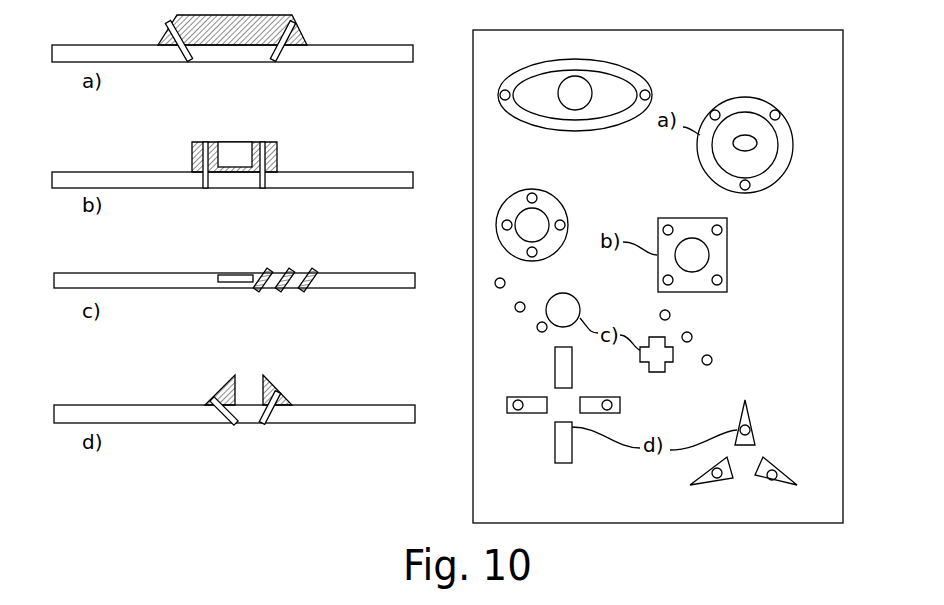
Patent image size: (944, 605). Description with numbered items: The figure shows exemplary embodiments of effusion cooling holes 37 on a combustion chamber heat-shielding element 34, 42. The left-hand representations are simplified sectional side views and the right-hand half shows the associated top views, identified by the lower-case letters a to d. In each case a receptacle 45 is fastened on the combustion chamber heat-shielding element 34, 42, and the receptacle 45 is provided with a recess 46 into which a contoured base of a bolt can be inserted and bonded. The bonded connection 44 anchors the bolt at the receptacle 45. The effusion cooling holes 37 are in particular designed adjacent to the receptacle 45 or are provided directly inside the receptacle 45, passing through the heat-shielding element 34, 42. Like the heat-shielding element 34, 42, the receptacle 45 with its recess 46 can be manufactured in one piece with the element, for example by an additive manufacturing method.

The combustion chamber heat-shielding element 34 is at (362, 53).
The combustion chamber heat-shielding element 42 is at (363, 282).
The effusion cooling holes 37 is at (283, 52).
The bonded connection 44 is at (273, 163).
The receptacle 45 is at (172, 48).
The recess 46 is at (233, 153).